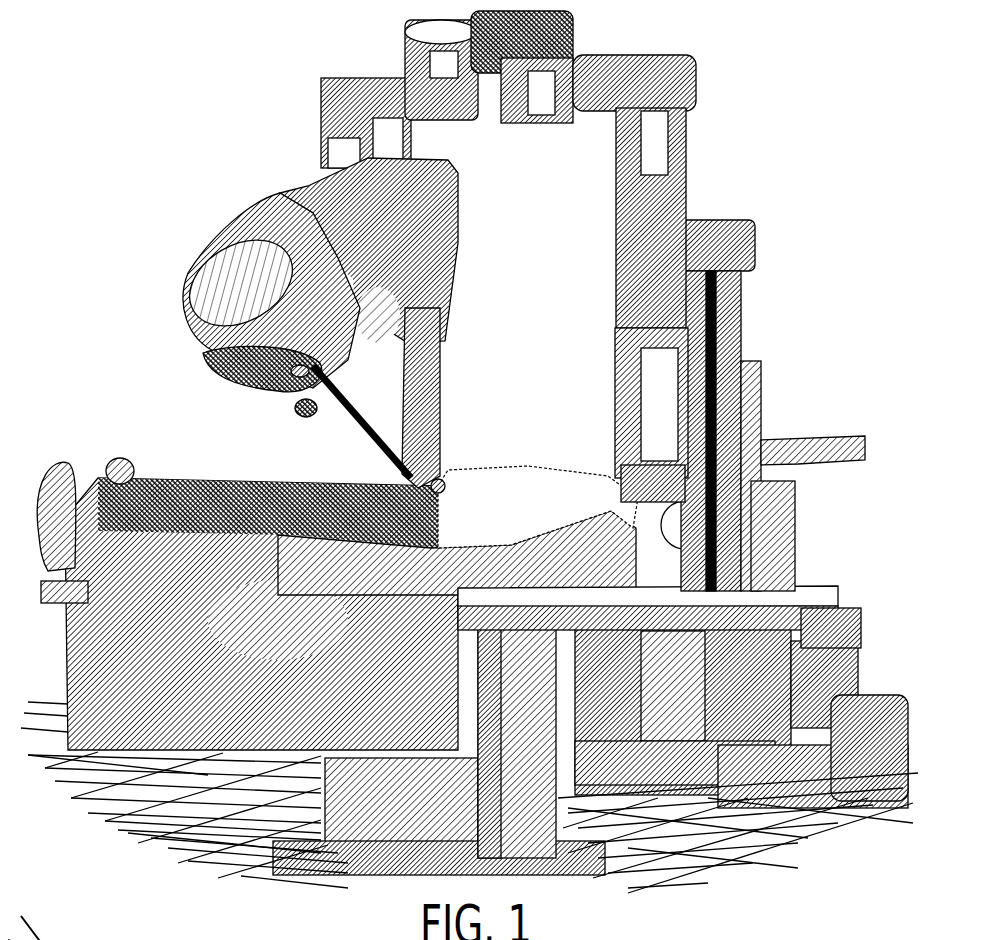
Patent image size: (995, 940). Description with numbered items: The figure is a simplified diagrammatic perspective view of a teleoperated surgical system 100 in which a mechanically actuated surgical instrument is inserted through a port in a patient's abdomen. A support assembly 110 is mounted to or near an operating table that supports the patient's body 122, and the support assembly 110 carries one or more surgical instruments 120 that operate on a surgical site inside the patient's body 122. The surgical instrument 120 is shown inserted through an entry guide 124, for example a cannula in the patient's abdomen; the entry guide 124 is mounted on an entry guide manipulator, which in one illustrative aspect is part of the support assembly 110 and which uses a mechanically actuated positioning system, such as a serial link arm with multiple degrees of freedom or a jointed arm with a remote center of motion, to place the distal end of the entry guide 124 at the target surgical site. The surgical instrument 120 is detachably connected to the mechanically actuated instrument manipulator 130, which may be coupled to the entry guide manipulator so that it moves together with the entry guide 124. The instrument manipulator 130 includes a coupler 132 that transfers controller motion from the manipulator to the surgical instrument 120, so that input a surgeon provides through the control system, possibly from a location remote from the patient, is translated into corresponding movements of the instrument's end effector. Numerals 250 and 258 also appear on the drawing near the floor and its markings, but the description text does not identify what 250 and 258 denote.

The teleoperated surgical system 100 is at (364, 256).
The support assembly 110 is at (300, 183).
The surgical instrument 120 is at (354, 398).
The patient's body 122 is at (493, 495).
The entry guide 124 is at (437, 477).
The instrument manipulator 130 is at (290, 362).
The coupler 132 is at (286, 398).
The floor 250 is at (469, 816).
The floor marker lines 258 is at (22, 915).